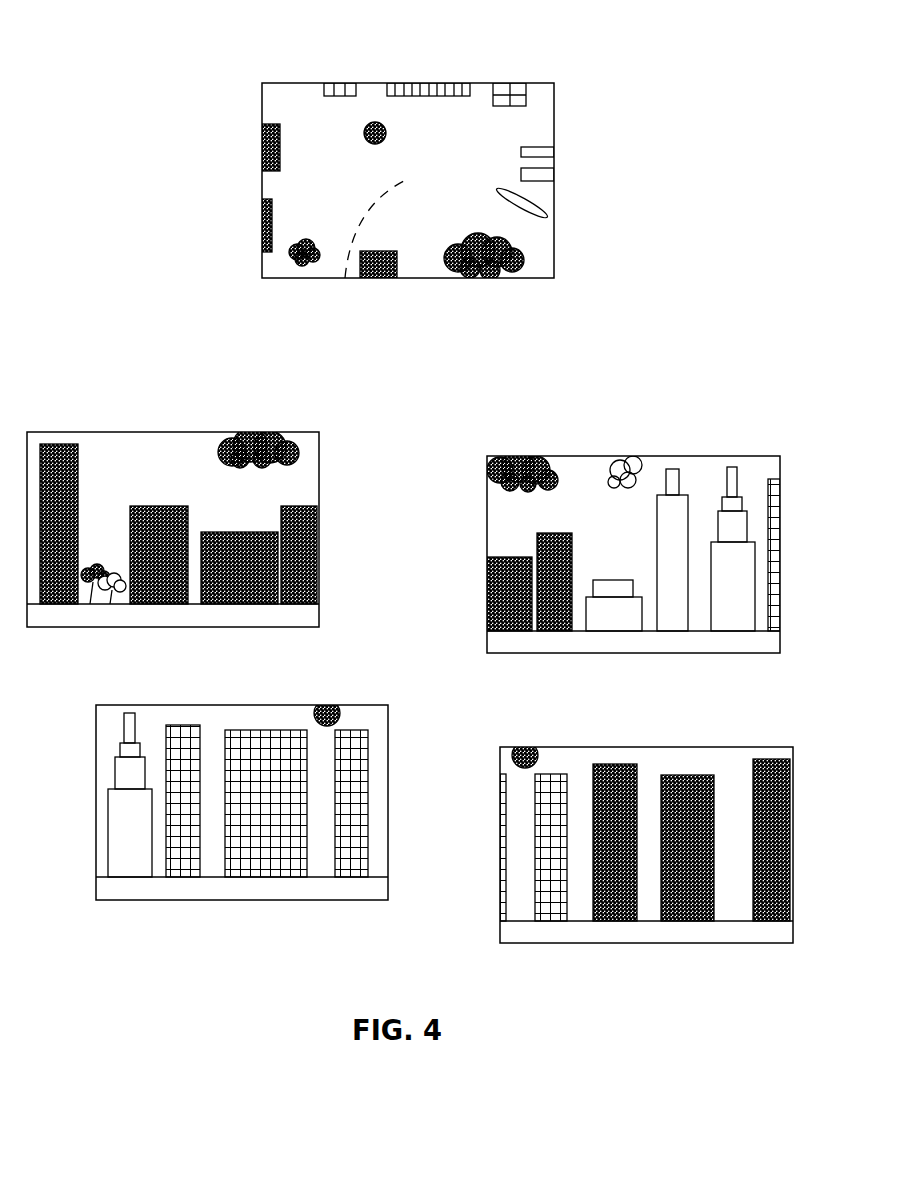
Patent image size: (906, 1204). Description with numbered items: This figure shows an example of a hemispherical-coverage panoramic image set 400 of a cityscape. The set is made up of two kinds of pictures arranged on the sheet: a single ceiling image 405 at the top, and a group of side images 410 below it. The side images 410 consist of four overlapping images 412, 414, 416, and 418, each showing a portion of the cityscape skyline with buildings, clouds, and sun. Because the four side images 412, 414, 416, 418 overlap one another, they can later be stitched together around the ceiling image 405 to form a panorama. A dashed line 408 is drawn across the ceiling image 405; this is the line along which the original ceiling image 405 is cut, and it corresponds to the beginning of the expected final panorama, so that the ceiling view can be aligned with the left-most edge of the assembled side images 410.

The hemispherical-coverage panoramic image set 400 is at (72, 34).
The ceiling image 405 is at (408, 165).
The line 408 is at (376, 228).
The side images 410 is at (410, 648).
The overlapping image 412 is at (173, 514).
The overlapping image 414 is at (633, 539).
The overlapping image 416 is at (242, 789).
The overlapping image 418 is at (646, 832).